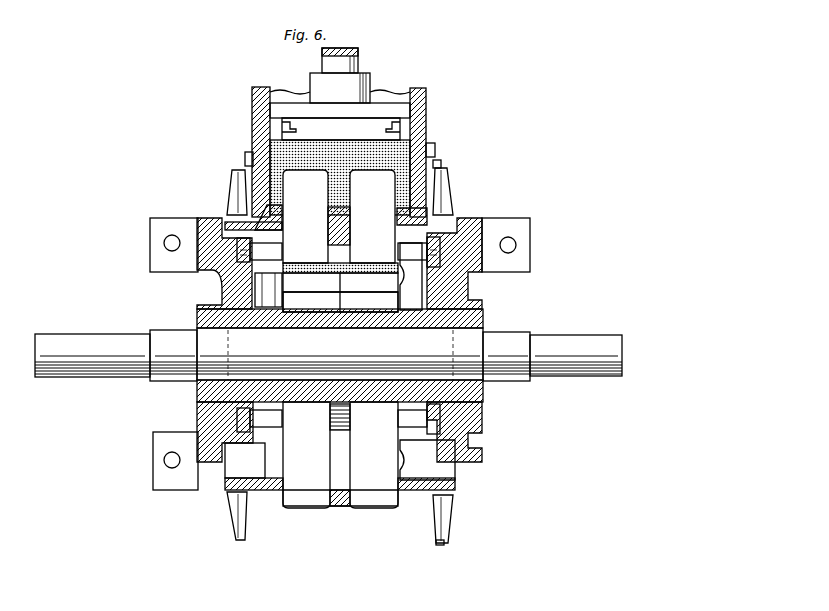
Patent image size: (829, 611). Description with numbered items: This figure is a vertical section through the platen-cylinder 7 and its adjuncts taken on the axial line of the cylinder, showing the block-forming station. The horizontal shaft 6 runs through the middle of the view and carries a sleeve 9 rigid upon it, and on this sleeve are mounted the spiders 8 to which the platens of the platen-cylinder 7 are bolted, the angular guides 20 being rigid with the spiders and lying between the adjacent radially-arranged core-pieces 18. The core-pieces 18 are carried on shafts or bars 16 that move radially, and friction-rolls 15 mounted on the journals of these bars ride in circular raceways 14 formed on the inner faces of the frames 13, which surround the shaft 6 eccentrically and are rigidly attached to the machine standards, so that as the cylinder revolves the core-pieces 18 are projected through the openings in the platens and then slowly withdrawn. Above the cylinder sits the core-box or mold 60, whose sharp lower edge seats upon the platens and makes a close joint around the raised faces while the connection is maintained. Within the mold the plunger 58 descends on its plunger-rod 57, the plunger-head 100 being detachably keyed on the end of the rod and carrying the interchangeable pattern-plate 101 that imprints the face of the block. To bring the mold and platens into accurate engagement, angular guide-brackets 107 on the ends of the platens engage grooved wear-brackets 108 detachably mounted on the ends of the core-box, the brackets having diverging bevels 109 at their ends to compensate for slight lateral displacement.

The horizontal shaft 6 is at (328, 354).
The platen-cylinder 7 is at (336, 522).
The spiders 8 is at (411, 276).
The sleeve 9 is at (487, 318).
The frames 13 is at (210, 290).
The circular raceways 14 is at (520, 208).
The friction-rolls 15 is at (445, 258).
The shafts or bars 16 is at (413, 447).
The core-pieces 18 is at (340, 339).
The angular guides 20 is at (340, 292).
The plunger-rod 57 is at (351, 60).
The plunger 58 is at (340, 111).
The core-box or mold 60 is at (428, 118).
The plunger-head 100 is at (340, 88).
The pattern-plate 101 is at (341, 129).
The angular guide-brackets 107 is at (447, 187).
The grooved wear-brackets 108 is at (244, 165).
The diverging bevels 109 is at (448, 168).